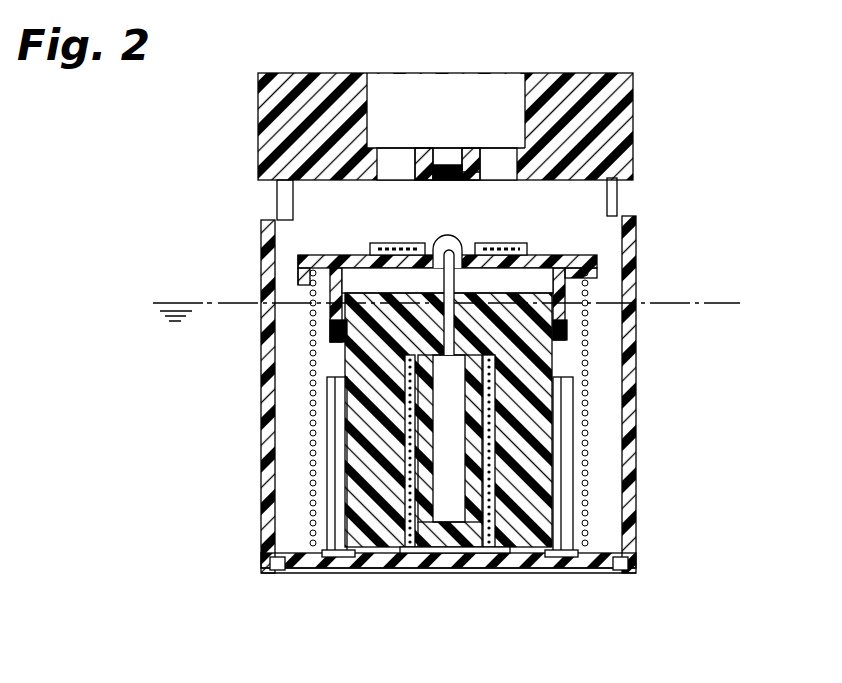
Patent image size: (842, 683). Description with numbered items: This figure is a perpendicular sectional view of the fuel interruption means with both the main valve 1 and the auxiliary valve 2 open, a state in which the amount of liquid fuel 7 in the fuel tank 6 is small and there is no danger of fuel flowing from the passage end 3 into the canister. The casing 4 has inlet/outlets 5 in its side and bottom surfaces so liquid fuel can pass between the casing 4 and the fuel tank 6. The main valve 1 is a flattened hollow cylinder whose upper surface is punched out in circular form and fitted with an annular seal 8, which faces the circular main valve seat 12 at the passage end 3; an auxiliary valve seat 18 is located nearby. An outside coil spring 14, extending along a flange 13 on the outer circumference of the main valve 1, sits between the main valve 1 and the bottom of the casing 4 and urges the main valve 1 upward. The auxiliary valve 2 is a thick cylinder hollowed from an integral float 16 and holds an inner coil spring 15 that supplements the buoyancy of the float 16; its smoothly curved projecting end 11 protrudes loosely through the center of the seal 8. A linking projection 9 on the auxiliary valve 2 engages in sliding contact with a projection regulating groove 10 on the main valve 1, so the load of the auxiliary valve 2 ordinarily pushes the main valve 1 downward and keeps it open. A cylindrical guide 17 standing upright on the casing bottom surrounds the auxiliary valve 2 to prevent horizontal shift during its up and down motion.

The main valve 1 is at (590, 270).
The auxiliary valve 2 is at (355, 322).
The passage end 3 is at (384, 103).
The casing 4 is at (637, 389).
The inlet/outlets 5 is at (283, 200).
The fuel tank 6 is at (179, 141).
The liquid fuel 7 is at (175, 398).
The annular seal 8 is at (527, 243).
The linking projection 9 is at (334, 313).
The projection regulating groove 10 is at (338, 295).
The projecting end 11 is at (444, 232).
The main valve seat 12 is at (398, 178).
The flange 13 is at (298, 268).
The coil spring 14 is at (585, 440).
The coil spring 15 is at (487, 540).
The float 16 is at (531, 517).
The cylindrical guide 17 is at (336, 492).
The auxiliary valve seat 18 is at (455, 172).